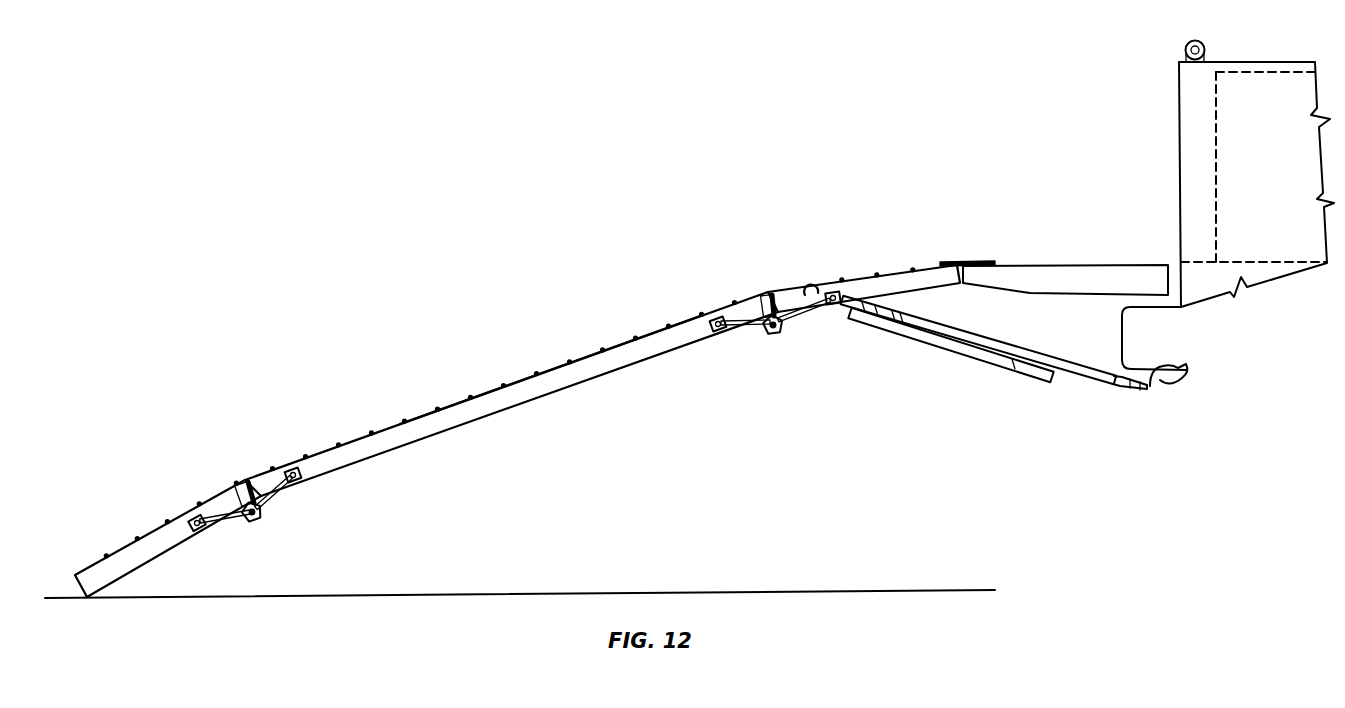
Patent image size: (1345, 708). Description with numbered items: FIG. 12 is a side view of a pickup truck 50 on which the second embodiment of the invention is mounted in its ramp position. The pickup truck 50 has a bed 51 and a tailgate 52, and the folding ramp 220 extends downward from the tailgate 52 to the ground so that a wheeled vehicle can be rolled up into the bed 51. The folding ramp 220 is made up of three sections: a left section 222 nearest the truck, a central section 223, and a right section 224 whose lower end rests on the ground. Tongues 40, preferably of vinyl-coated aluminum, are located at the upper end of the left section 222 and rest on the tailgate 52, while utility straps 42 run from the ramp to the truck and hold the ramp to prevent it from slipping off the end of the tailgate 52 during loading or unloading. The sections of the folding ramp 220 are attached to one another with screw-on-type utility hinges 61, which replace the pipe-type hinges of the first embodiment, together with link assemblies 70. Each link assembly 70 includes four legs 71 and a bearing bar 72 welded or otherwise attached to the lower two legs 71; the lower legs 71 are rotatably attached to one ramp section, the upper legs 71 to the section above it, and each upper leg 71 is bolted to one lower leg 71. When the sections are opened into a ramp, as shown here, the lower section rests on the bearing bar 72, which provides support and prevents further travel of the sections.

The right section of folding ramp 224 is at (152, 528).
The central section of folding ramp 223 is at (487, 392).
The folding ramp 220 is at (617, 345).
The left section of folding ramp 222 is at (889, 264).
The tongues 40 is at (979, 261).
The tailgate 52 is at (1086, 263).
The bed 51 is at (1257, 262).
The pickup truck 50 is at (1267, 283).
The utility straps 42 is at (1023, 377).
The screw-on-type utility hinges 61 is at (248, 500).
The link assemblies 70 is at (260, 520).
The bearing bar 72 is at (267, 502).
The legs 71 is at (235, 527).